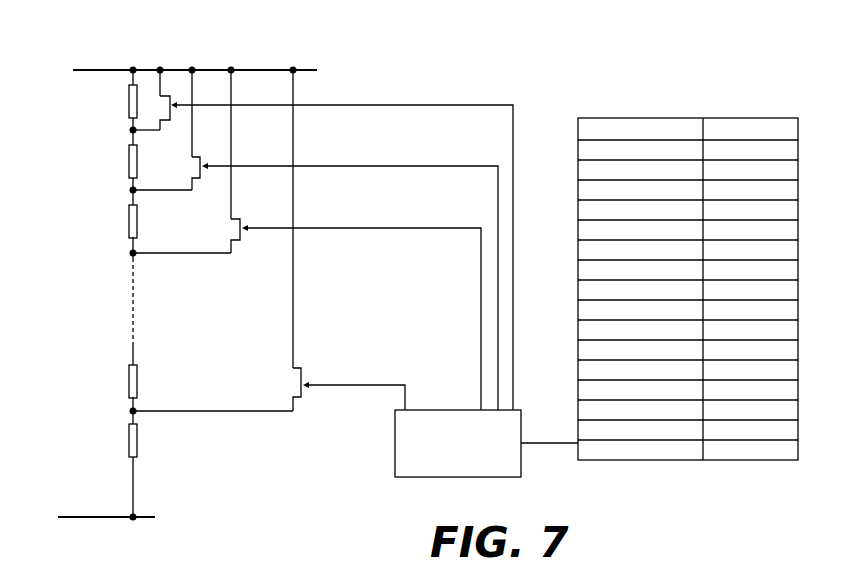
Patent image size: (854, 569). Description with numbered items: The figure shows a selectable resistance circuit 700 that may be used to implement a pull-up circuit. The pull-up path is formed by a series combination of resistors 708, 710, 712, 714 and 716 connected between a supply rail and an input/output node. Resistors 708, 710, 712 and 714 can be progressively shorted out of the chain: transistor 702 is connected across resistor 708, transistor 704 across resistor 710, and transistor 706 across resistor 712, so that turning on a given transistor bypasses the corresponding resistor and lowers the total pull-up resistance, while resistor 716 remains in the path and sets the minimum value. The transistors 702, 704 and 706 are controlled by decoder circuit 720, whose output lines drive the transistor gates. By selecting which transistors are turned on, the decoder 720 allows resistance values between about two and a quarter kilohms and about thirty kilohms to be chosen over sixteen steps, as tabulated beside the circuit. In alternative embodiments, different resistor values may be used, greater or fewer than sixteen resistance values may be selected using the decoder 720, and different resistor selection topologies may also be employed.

The programmable pull-up resistor circuit 700 is at (110, 38).
The transistor 702 is at (166, 116).
The transistor 704 is at (200, 176).
The transistor 706 is at (240, 234).
The resistor 708 is at (127, 111).
The resistor 710 is at (127, 173).
The resistor 712 is at (127, 229).
The resistor 714 is at (128, 378).
The resistor 716 is at (128, 439).
The decoder circuit 720 is at (440, 470).